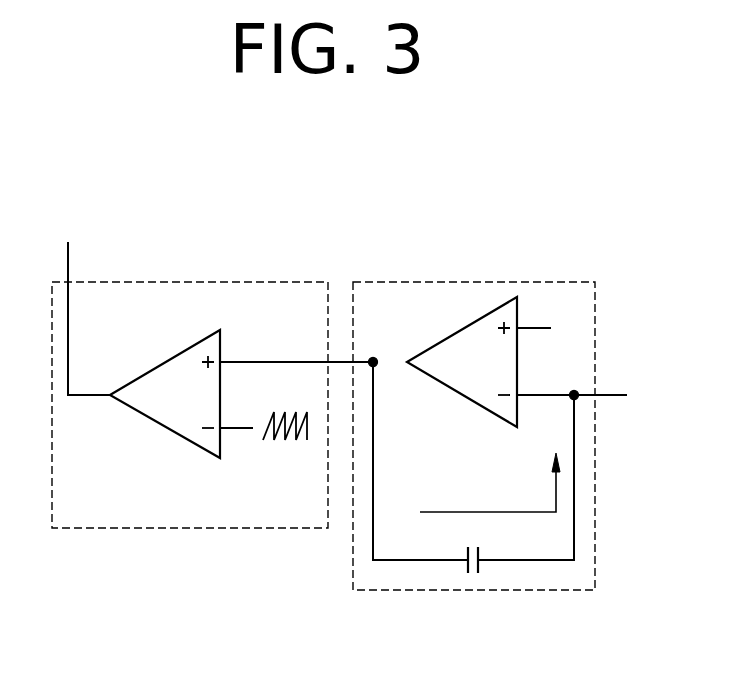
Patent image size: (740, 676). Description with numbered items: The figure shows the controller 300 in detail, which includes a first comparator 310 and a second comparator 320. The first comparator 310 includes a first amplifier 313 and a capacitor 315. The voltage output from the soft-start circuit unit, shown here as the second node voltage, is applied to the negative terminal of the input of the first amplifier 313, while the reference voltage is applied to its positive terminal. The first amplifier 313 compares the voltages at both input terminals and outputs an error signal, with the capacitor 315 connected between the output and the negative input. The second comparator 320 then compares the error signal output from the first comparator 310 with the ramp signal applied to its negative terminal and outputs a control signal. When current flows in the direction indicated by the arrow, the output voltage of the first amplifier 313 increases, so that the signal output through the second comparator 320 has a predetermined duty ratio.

The controller 300 is at (275, 165).
The first comparator 310 is at (506, 282).
The first amplifier 313 is at (460, 327).
The capacitor 315 is at (480, 567).
The second comparator 320 is at (195, 282).